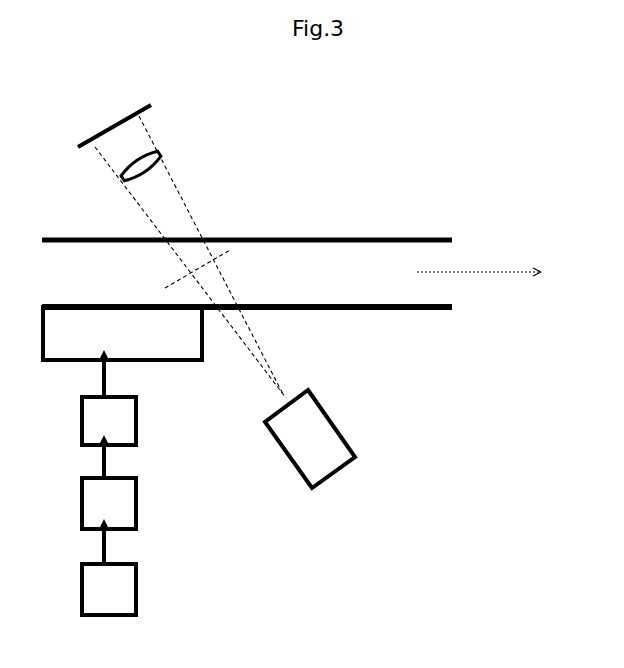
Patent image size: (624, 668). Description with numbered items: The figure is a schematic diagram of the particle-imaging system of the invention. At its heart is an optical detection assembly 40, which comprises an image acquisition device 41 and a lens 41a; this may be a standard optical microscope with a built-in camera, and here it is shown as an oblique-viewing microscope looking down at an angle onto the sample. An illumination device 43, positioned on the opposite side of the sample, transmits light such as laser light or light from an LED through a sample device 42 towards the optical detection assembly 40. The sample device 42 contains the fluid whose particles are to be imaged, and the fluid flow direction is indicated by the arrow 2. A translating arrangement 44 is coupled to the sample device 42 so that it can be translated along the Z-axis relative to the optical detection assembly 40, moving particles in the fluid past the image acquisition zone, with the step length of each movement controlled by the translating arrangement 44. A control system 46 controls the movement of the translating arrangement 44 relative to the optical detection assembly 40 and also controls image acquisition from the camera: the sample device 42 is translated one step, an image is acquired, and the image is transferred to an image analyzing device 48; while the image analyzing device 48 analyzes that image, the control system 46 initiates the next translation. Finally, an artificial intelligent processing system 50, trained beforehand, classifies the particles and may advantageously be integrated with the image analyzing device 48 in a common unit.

The flow direction 2 is at (479, 261).
The optical detection assembly 40 is at (329, 171).
The image acquisition device 41 is at (151, 107).
The lens 41a is at (173, 160).
The sample device 42 is at (338, 288).
The illumination device 43 is at (331, 437).
The translating arrangement 44 is at (95, 351).
The control system 46 is at (129, 418).
The image analyzing device 48 is at (128, 503).
The artificial intelligent processing system 50 is at (118, 596).